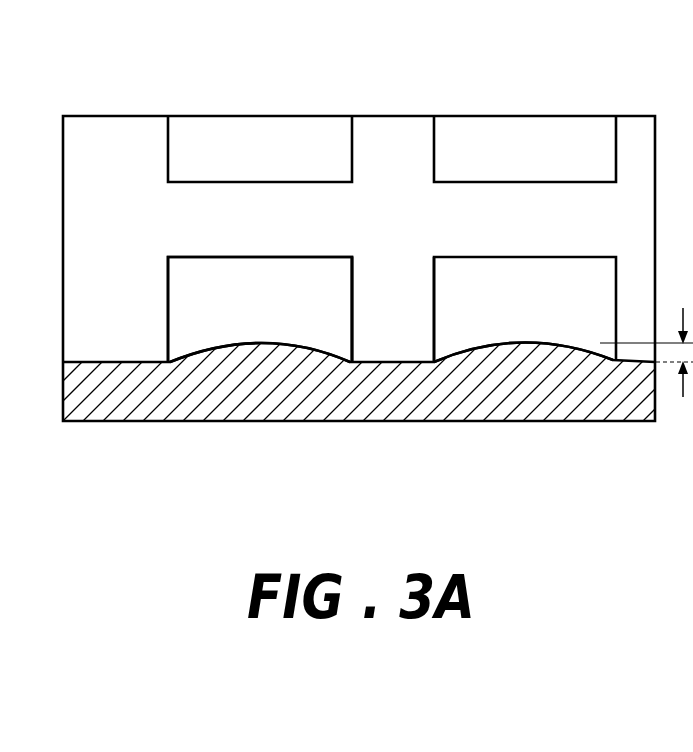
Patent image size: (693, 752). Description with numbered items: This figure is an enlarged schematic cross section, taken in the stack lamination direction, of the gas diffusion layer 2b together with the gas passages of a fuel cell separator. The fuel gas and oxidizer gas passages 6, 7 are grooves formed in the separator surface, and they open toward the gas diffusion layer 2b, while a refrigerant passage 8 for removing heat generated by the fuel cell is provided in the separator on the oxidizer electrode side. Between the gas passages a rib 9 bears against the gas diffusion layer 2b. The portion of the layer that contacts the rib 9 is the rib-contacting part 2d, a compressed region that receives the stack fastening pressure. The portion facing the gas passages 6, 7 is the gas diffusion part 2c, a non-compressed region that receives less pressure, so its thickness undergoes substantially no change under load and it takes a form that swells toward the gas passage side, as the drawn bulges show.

The gas diffusion layer 2b is at (145, 405).
The gas diffusion part 2c is at (350, 443).
The rib-contacting part 2d is at (433, 442).
The fuel gas passage 6 is at (255, 278).
The oxidizer gas passage 7 is at (260, 309).
The refrigerant passage 8 is at (547, 138).
The rib 9 is at (392, 280).